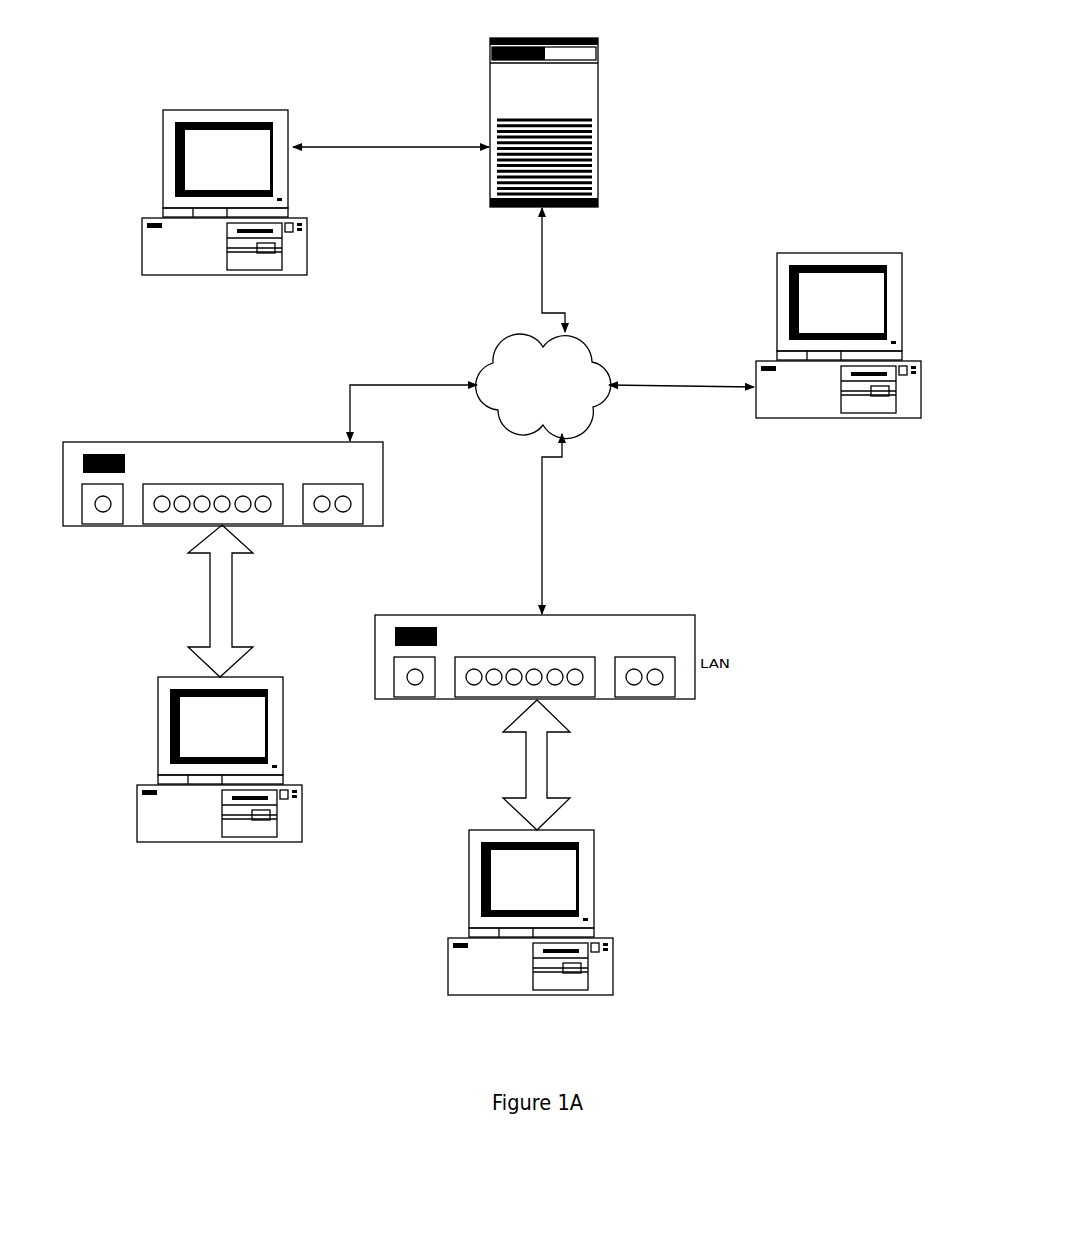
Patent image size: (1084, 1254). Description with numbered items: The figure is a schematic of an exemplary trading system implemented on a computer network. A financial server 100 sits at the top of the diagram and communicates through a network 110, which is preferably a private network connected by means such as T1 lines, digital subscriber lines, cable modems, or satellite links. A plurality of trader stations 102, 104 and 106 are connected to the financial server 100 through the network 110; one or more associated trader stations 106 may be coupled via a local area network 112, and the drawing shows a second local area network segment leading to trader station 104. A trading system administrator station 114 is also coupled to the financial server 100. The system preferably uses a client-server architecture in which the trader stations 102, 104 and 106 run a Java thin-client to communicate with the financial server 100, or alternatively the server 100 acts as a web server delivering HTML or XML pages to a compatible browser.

The financial server 100 is at (544, 110).
The trading system administrator station 114 is at (228, 178).
The trader station 102 is at (847, 316).
The network 110 is at (555, 383).
The local area network 112 is at (223, 463).
The trader station 106 is at (219, 771).
The trader station 104 is at (530, 927).